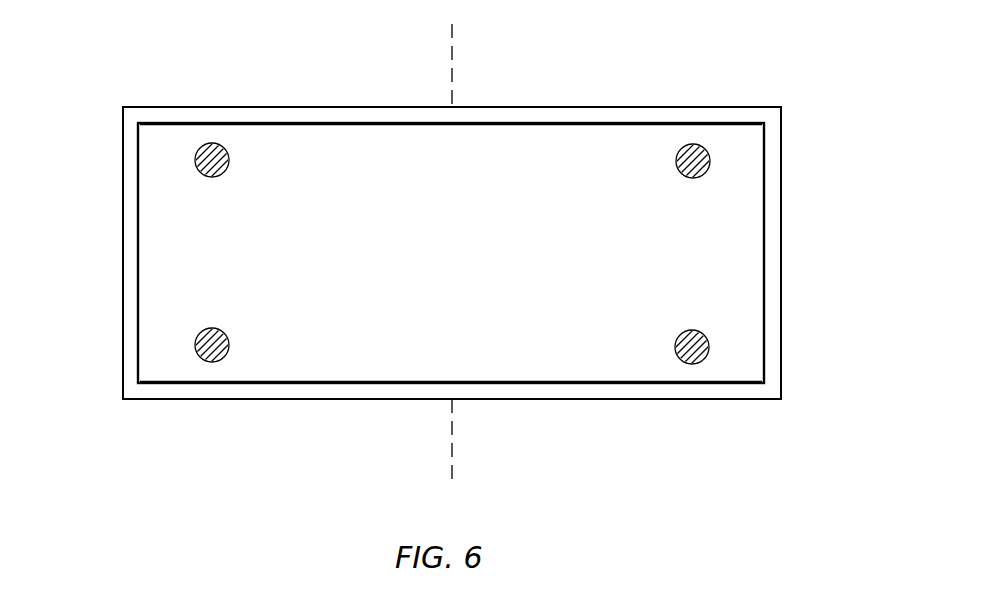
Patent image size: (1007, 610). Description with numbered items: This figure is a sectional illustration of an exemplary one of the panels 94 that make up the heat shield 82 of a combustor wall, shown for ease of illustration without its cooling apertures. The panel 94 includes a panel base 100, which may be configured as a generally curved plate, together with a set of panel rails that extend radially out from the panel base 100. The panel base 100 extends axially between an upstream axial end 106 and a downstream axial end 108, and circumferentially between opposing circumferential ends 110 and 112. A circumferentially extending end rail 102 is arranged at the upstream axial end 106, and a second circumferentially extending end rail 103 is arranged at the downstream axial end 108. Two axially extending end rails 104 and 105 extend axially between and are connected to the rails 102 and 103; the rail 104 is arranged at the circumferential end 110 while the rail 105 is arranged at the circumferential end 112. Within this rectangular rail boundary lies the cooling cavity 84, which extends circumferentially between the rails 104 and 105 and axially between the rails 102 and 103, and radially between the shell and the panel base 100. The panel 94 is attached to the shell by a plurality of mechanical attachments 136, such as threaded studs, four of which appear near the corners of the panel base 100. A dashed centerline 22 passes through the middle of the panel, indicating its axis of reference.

The centerline axis 22 is at (453, 38).
The heat shield 82 is at (454, 249).
The cooling cavity 84 is at (451, 261).
The panel 94 is at (454, 258).
The panel base 100 is at (451, 261).
The circumferentially extending end rail 102 is at (507, 392).
The circumferentially extending end rail 103 is at (527, 118).
The axially extending end rail 104 is at (454, 253).
The axially extending end rail 105 is at (454, 253).
The upstream axial end 106 is at (123, 157).
The downstream axial end 108 is at (454, 253).
The circumferential end 110 is at (454, 259).
The circumferential end 112 is at (454, 219).
The mechanical attachment 136 is at (212, 143).